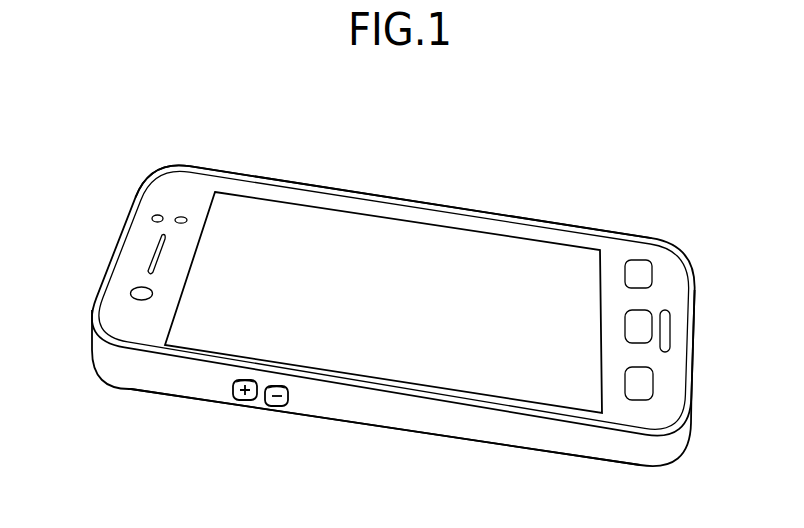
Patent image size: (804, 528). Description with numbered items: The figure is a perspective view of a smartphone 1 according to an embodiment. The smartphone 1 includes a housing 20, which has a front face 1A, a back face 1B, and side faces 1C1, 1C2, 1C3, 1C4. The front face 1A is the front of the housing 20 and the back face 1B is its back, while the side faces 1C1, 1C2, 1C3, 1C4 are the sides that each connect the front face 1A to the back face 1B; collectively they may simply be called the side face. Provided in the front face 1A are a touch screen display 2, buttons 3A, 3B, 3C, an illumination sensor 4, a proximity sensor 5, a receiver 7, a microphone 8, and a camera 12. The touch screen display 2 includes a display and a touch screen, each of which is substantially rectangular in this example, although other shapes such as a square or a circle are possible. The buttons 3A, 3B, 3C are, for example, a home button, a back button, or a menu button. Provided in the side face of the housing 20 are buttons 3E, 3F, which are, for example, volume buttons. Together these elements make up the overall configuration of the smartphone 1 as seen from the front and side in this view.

The smartphone 1 is at (406, 290).
The front face 1A is at (120, 323).
The back face 1B is at (152, 393).
The side face 1C1 is at (133, 195).
The side face 1C2 is at (698, 372).
The side face 1C3 is at (460, 423).
The side face 1C4 is at (340, 186).
The touch screen display 2 is at (470, 247).
The button 3A is at (653, 392).
The button 3B is at (643, 310).
The button 3C is at (637, 260).
The button 3E is at (248, 400).
The button 3F is at (280, 406).
The illumination sensor 4 is at (150, 216).
The proximity sensor 5 is at (182, 212).
The receiver 7 is at (150, 248).
The microphone 8 is at (670, 333).
The camera 12 is at (131, 290).
The housing 20 is at (207, 385).